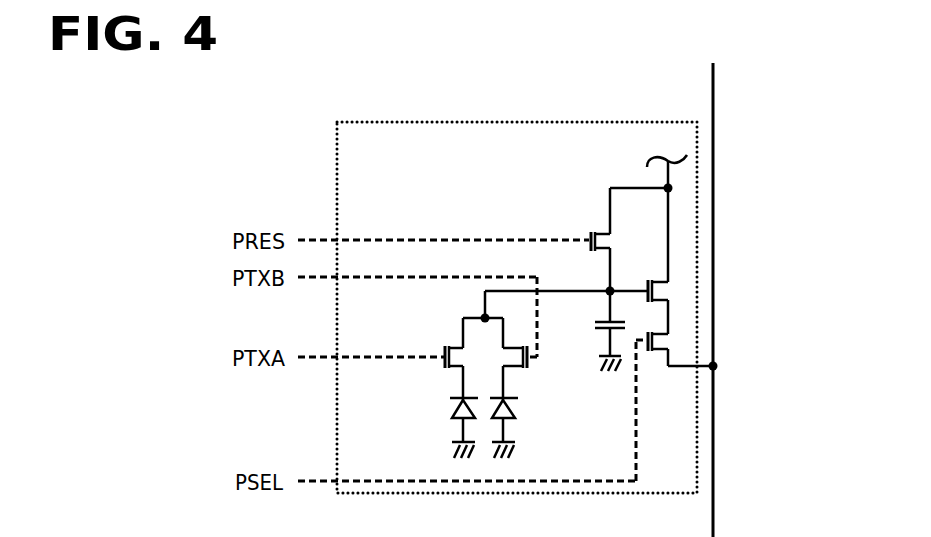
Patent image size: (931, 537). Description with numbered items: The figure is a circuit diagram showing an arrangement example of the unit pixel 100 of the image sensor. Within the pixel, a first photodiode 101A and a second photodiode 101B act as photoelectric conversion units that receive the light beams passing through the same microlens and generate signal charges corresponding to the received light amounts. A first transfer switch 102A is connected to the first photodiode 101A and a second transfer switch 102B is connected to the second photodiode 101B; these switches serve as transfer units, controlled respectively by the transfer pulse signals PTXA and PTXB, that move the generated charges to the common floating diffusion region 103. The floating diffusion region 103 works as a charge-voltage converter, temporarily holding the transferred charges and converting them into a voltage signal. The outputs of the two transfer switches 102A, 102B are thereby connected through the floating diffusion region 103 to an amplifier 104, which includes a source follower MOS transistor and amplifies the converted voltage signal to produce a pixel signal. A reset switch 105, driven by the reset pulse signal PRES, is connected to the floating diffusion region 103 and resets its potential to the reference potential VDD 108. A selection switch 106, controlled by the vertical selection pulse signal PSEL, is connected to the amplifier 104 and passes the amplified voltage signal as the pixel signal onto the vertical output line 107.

The unit pixel 100 is at (389, 121).
The first photodiode 101A is at (450, 409).
The second photodiode 101B is at (518, 409).
The first transfer switch 102A is at (441, 369).
The second transfer switch 102B is at (531, 369).
The floating diffusion region 103 is at (594, 322).
The amplifier 104 is at (660, 291).
The reset switch 105 is at (587, 236).
The selection switch 106 is at (660, 346).
The vertical output line 107 is at (714, 409).
The reference potential VDD 108 is at (667, 146).